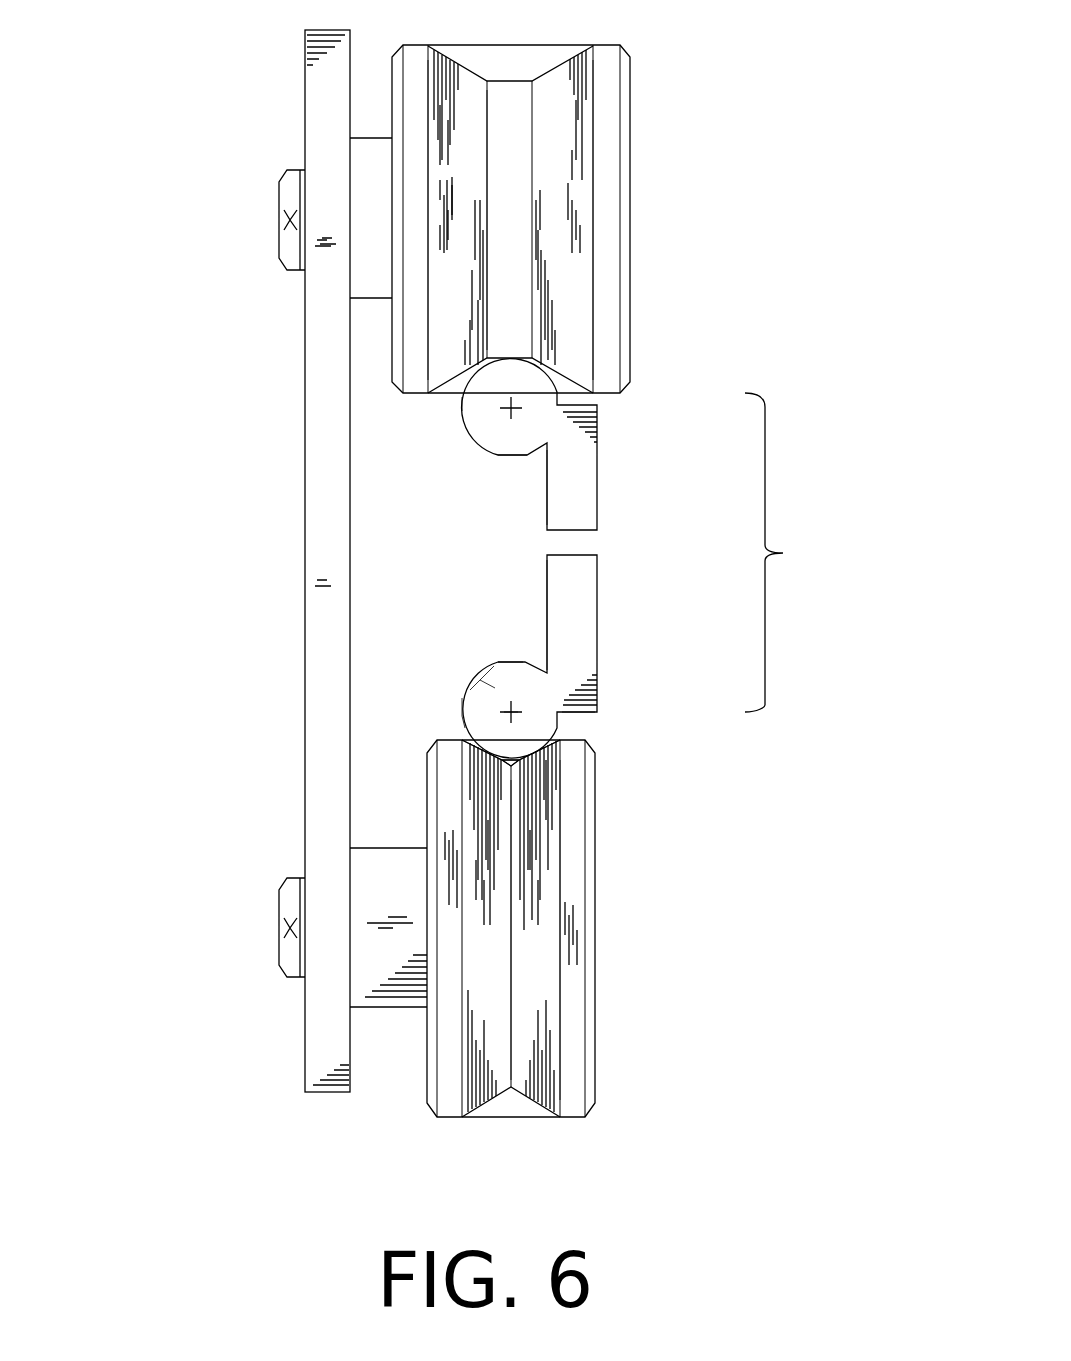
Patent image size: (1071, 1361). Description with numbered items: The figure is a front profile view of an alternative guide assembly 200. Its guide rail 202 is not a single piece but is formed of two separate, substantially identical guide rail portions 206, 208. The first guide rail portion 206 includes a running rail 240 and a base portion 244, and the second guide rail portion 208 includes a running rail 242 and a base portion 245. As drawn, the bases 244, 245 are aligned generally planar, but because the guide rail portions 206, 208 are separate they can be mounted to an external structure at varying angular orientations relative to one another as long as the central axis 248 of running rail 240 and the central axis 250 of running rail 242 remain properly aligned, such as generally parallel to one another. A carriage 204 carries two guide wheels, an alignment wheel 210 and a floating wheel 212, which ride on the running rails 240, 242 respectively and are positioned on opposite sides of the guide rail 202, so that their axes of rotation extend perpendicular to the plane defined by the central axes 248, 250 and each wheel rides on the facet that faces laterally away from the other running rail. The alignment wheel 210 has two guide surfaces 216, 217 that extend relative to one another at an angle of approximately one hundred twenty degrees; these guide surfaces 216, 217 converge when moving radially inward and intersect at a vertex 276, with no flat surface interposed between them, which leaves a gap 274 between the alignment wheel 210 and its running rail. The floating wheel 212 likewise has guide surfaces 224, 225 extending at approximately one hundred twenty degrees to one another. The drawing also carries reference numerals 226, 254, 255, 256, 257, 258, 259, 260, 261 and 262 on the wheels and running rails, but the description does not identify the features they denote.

The guide assembly 200 is at (230, 449).
The guide rail 202 is at (810, 552).
The carriage 204 is at (264, 92).
The guide rail portion 206 is at (527, 634).
The guide rail portion 208 is at (496, 478).
The alignment wheel 210 is at (473, 953).
The floating wheel 212 is at (578, 300).
The guide surface 216 is at (540, 987).
The guide surface 217 is at (495, 1013).
The guide surface 224 is at (453, 273).
The guide surface 225 is at (560, 157).
The upper wheel groove 226 is at (508, 285).
The running rail 240 is at (484, 676).
The running rail 242 is at (475, 414).
The base portion 244 is at (590, 605).
The base portion 245 is at (590, 505).
The central axis 248 is at (513, 708).
The central axis 250 is at (512, 410).
The top flat of lower ball 254 is at (510, 660).
The upper left chamfer of lower ball 255 is at (490, 663).
The left side surface of lower ball 256 is at (462, 708).
The left side surface of lower ball 257 is at (460, 712).
The lower left surface of lower ball 258 is at (462, 727).
The left groove flank of lower wheel 259 is at (513, 762).
The groove apex of lower wheel 260 is at (513, 767).
The right groove flank of lower wheel 261 is at (520, 757).
The lower step of lower bracket 262 is at (563, 722).
The gap 274 is at (513, 765).
The vertex 276 is at (510, 770).